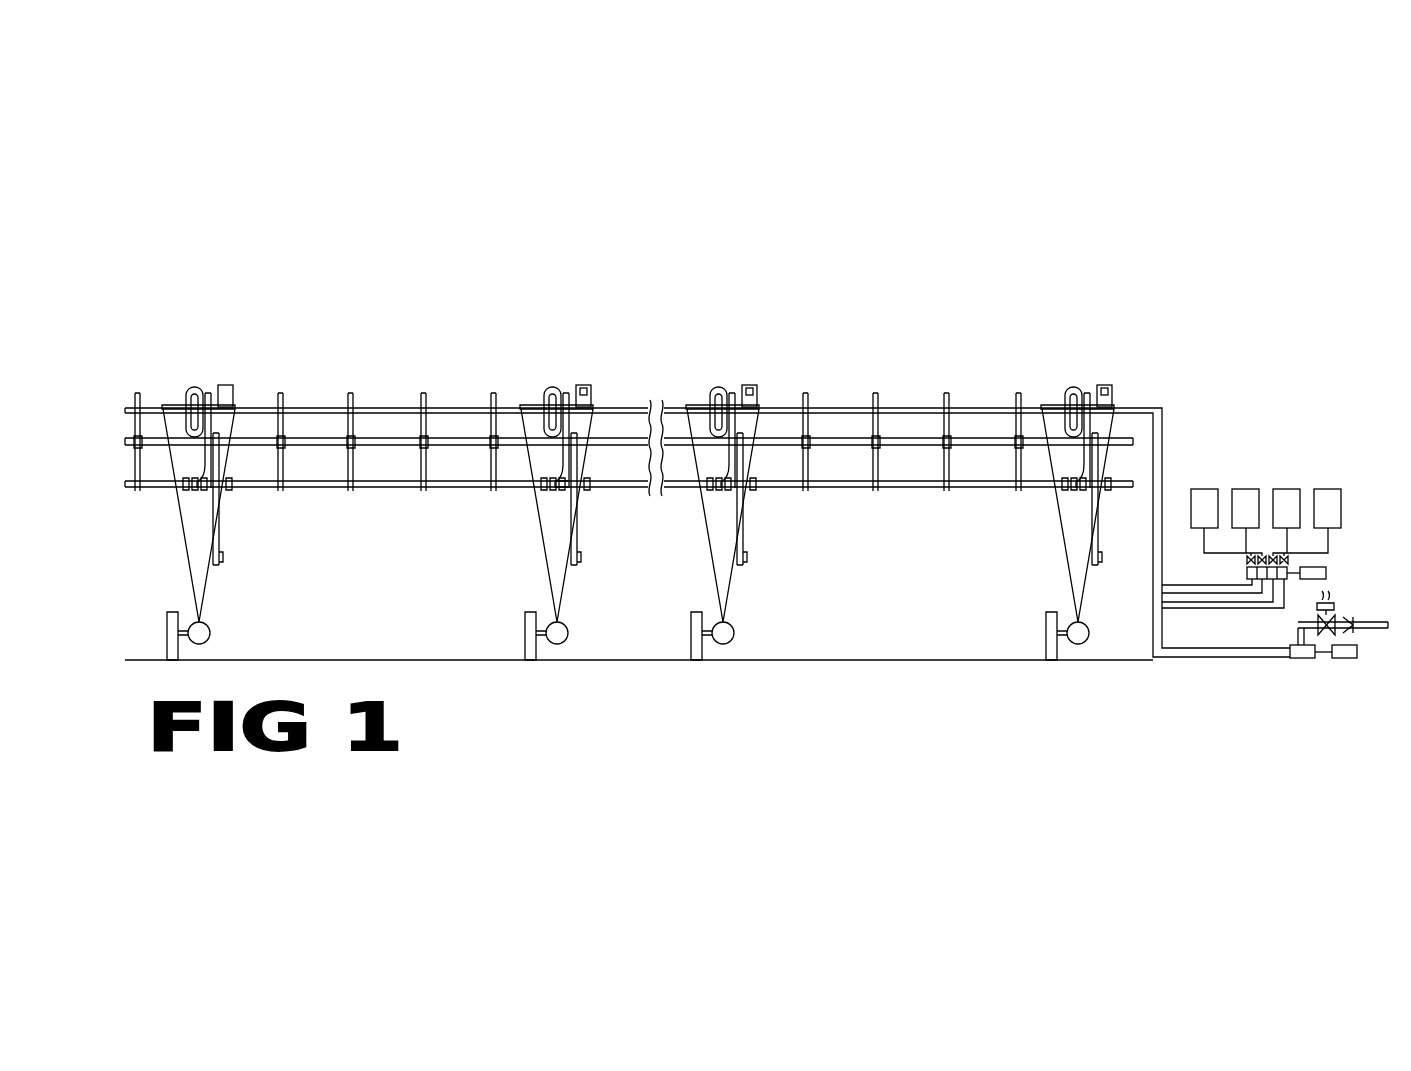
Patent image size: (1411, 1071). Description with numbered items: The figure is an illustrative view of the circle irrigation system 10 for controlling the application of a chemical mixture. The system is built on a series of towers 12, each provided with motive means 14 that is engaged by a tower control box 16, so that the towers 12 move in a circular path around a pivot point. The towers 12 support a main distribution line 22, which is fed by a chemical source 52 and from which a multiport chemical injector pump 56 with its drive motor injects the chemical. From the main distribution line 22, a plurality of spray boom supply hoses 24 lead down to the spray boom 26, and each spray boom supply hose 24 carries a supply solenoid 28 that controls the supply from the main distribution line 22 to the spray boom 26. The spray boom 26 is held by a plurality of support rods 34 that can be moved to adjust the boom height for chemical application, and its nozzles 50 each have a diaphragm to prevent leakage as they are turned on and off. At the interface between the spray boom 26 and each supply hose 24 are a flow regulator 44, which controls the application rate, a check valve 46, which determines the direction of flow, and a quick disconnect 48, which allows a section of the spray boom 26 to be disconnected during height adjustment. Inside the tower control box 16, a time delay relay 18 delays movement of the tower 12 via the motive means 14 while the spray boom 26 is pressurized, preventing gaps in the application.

The circle irrigation system 10 is at (917, 323).
The tower 12 is at (1060, 515).
The motive means 14 is at (1076, 618).
The tower control box 16 is at (590, 389).
The time delay relay 18 is at (580, 388).
The main distribution line 22 is at (847, 410).
The spray boom supply hose 24 is at (1077, 387).
The spray boom 26 is at (622, 488).
The supply solenoid 28 is at (553, 415).
The support rod 34 is at (350, 428).
The flow regulator 44 is at (560, 490).
The check valve 46 is at (233, 490).
The quick disconnect 48 is at (542, 490).
The nozzle 50 is at (463, 488).
The chemical source 52 is at (1262, 475).
The multiport chemical injector pump 56 is at (1378, 623).